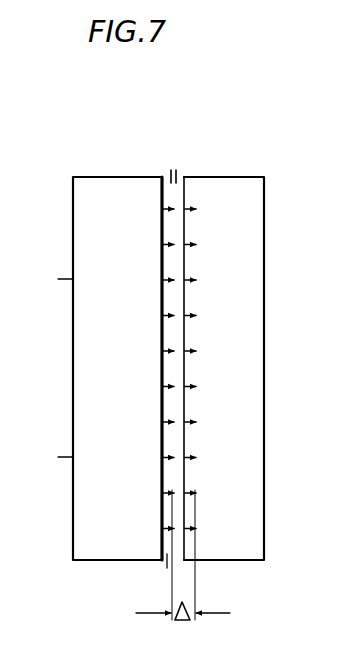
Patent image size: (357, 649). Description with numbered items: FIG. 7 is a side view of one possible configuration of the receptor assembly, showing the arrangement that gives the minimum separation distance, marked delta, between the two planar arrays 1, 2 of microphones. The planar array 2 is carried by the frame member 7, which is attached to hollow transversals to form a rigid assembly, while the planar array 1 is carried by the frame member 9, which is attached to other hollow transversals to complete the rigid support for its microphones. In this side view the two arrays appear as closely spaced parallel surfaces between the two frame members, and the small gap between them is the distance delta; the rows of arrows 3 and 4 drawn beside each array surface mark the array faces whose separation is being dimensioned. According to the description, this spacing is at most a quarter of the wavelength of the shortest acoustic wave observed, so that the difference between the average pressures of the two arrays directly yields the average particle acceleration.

The planar array 1 is at (188, 228).
The planar array 2 is at (159, 226).
The field lines 3 is at (163, 285).
The field lines 4 is at (192, 281).
The frame member 7 is at (90, 176).
The frame member 9 is at (210, 172).